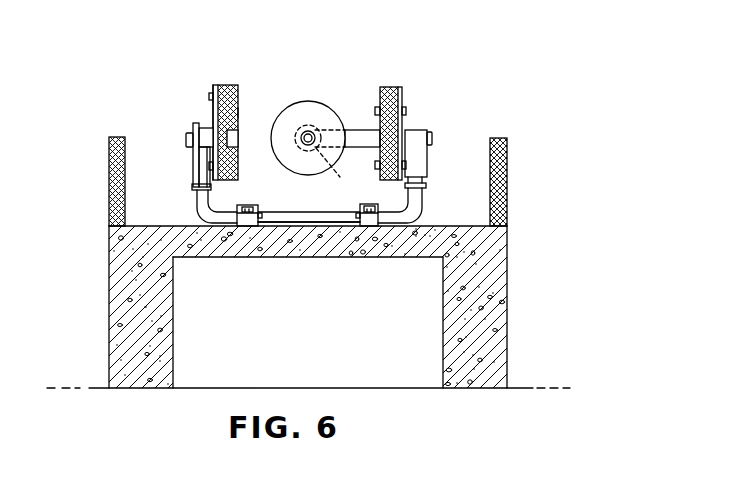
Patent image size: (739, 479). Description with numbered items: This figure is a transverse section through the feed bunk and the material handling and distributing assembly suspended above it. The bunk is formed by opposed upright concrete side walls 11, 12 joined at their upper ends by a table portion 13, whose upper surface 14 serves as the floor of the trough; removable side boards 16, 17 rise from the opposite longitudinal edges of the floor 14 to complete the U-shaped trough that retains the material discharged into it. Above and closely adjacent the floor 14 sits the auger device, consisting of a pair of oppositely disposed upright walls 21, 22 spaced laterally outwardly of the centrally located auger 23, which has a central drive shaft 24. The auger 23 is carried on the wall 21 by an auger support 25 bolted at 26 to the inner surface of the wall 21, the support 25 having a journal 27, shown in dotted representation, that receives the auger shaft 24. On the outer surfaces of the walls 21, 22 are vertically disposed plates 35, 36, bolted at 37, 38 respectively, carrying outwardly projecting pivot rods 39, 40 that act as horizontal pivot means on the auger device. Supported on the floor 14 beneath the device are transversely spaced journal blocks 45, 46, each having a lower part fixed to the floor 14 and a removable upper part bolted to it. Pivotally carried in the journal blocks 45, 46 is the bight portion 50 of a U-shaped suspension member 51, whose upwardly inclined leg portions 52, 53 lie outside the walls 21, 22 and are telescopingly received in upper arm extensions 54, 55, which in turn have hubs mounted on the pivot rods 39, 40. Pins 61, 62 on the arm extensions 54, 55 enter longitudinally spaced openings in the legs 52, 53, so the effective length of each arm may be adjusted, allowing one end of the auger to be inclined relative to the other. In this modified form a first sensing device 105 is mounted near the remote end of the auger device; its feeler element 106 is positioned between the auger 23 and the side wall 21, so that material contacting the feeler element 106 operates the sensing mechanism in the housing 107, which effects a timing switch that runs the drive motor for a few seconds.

The concrete side wall 11 is at (172, 311).
The concrete side wall 12 is at (443, 315).
The table portion 13 is at (312, 230).
The upper surface 14 is at (440, 226).
The removable side board 16 is at (109, 154).
The removable side board 17 is at (507, 182).
The upright wall 21 is at (236, 85).
The upright wall 22 is at (388, 87).
The auger 23 is at (313, 108).
The central drive shaft 24 is at (316, 132).
The auger support 25 is at (357, 135).
The bolt 26 is at (376, 107).
The journal 27 is at (331, 169).
The plate 35 is at (214, 98).
The plate 36 is at (406, 112).
The bolt 37 is at (212, 100).
The bolt 38 is at (404, 108).
The pivot rod 39 is at (186, 136).
The pivot rod 40 is at (432, 137).
The journal block 45 is at (251, 205).
The journal block 46 is at (374, 203).
The bight portion 50 is at (285, 224).
The U-shaped suspension member 51 is at (313, 212).
The leg portion 52 is at (198, 193).
The leg portion 53 is at (420, 200).
The upper arm extension 54 is at (199, 160).
The upper arm extension 55 is at (417, 173).
The pin 61 is at (192, 187).
The pin 62 is at (426, 185).
The first sensing device 105 is at (204, 127).
The feeler element 106 is at (240, 112).
The housing 107 is at (195, 126).